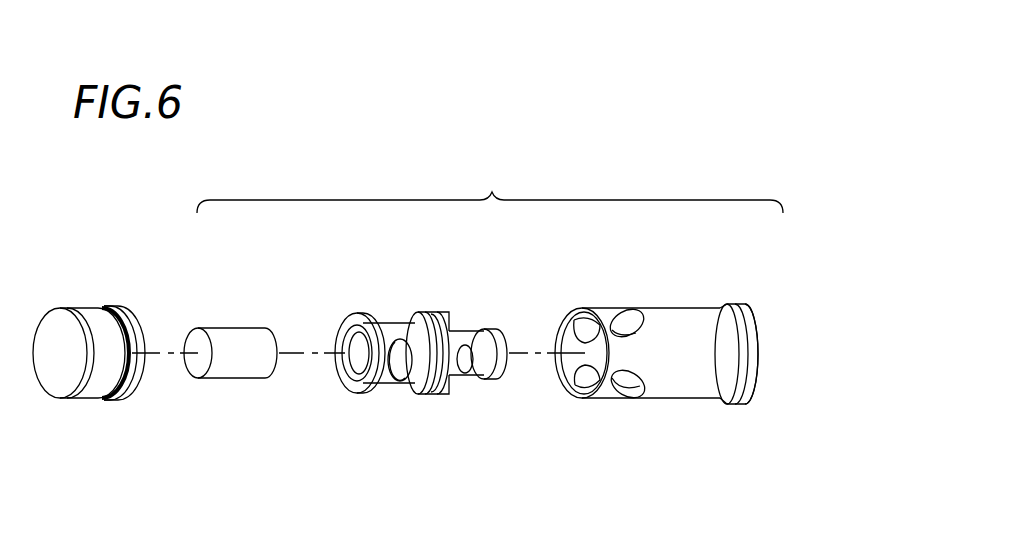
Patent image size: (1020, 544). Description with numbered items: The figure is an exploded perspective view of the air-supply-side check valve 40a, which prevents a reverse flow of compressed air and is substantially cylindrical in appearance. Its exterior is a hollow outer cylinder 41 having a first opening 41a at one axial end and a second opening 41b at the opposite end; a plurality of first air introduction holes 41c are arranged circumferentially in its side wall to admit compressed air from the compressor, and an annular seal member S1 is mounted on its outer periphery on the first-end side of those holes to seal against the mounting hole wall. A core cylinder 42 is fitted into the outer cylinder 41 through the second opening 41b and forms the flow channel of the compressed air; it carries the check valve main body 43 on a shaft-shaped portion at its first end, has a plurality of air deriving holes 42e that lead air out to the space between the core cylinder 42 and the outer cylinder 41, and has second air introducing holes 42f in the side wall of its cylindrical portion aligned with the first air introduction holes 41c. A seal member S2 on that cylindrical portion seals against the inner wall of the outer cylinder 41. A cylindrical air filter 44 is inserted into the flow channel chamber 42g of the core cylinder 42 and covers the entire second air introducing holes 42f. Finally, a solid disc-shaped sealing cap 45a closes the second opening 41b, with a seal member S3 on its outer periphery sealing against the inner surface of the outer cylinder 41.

The air-supply-side check valve 40a is at (490, 185).
The outer cylinder 41 is at (666, 355).
The first opening 41a is at (760, 300).
The second opening 41b is at (575, 305).
The first air introduction holes 41c is at (630, 388).
The core cylinder 42 is at (415, 347).
The air deriving holes 42e is at (468, 372).
The second air introducing holes 42f is at (400, 372).
The flow channel chamber 42g is at (352, 363).
The check valve main body 43 is at (491, 325).
The air filter 44 is at (232, 343).
The sealing cap 45a is at (90, 325).
The seal member S1 is at (748, 385).
The seal member S2 is at (443, 383).
The seal member S3 is at (113, 380).